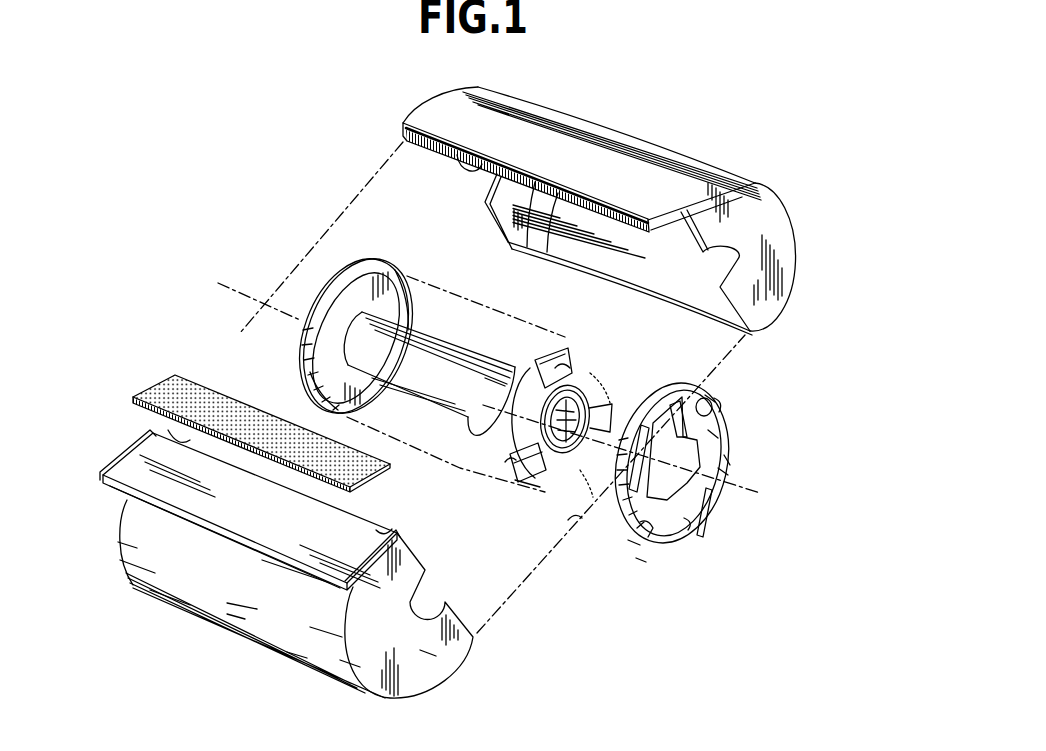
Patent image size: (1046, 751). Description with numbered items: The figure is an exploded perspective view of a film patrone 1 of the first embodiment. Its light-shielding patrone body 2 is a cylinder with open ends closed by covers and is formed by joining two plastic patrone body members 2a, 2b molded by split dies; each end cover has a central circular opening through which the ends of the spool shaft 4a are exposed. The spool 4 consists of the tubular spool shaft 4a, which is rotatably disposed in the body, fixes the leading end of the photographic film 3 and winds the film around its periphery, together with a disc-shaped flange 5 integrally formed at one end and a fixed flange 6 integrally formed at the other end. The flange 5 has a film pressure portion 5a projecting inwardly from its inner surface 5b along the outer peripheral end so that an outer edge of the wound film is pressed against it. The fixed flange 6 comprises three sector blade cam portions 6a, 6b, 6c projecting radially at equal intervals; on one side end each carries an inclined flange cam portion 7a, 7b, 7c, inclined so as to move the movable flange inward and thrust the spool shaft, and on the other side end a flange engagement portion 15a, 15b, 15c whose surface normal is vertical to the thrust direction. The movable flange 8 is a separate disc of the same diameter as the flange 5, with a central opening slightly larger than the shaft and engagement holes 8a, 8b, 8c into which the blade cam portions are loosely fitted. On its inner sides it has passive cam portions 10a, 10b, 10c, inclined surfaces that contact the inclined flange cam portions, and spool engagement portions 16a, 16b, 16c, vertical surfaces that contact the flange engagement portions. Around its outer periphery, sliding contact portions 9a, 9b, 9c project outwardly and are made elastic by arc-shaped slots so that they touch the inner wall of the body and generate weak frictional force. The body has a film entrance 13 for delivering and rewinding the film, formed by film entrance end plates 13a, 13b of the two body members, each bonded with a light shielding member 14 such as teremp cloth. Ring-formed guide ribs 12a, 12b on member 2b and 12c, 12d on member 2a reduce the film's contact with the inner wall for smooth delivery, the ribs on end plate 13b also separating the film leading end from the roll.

The film patrone 1 is at (272, 249).
The patrone body 2 is at (622, 155).
The patrone body member 2a is at (599, 209).
The patrone body member 2b is at (213, 583).
The photographic film 3 is at (442, 307).
The spool 4 is at (429, 401).
The spool shaft 4a is at (487, 432).
The flange 5 is at (336, 311).
The film pressure portion 5a is at (410, 278).
The inner surface 5b is at (330, 383).
The fixed flange 6 is at (557, 453).
The blade cam portion 6a is at (587, 360).
The blade cam portion 6b is at (525, 485).
The blade cam portion 6c is at (600, 445).
The inclined flange cam portion 7a is at (537, 352).
The inclined flange cam portion 7b is at (545, 488).
The inclined flange cam portion 7c is at (617, 386).
The movable flange 8 is at (720, 491).
The engagement hole 8a is at (713, 400).
The engagement hole 8b is at (634, 545).
The engagement hole 8c is at (723, 472).
The sliding contact portion 9a is at (612, 503).
The sliding contact portion 9b is at (690, 525).
The sliding contact portion 9c is at (720, 407).
The passive cam portion 10a is at (713, 435).
The passive cam portion 10b is at (641, 562).
The passive cam portion 10c is at (737, 461).
The guide rib 12a is at (185, 440).
The guide rib 12b is at (380, 530).
The guide rib 12c is at (528, 252).
The guide rib 12d is at (707, 313).
The film entrance 13 is at (273, 548).
The film entrance end plate 13a is at (457, 130).
The film entrance end plate 13b is at (280, 533).
The light shielding member 14 is at (172, 375).
The flange engagement portion 15a is at (560, 370).
The flange engagement portion 15b is at (508, 460).
The flange engagement portion 15c is at (573, 520).
The spool engagement portion 16a is at (702, 388).
The spool engagement portion 16b is at (688, 505).
The spool engagement portion 16c is at (727, 482).